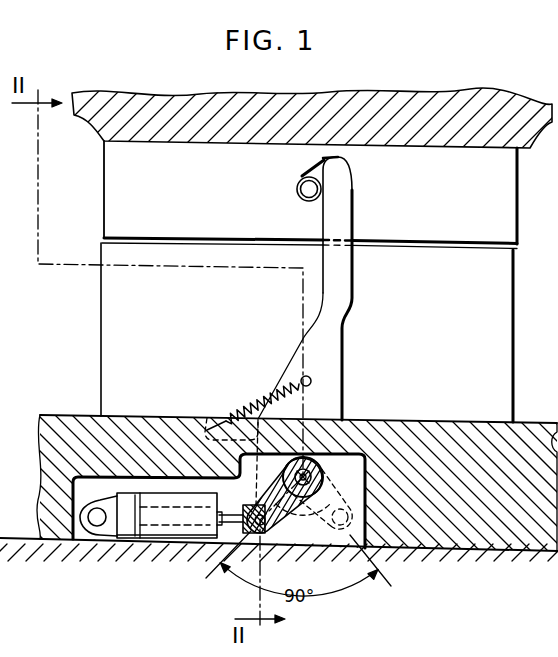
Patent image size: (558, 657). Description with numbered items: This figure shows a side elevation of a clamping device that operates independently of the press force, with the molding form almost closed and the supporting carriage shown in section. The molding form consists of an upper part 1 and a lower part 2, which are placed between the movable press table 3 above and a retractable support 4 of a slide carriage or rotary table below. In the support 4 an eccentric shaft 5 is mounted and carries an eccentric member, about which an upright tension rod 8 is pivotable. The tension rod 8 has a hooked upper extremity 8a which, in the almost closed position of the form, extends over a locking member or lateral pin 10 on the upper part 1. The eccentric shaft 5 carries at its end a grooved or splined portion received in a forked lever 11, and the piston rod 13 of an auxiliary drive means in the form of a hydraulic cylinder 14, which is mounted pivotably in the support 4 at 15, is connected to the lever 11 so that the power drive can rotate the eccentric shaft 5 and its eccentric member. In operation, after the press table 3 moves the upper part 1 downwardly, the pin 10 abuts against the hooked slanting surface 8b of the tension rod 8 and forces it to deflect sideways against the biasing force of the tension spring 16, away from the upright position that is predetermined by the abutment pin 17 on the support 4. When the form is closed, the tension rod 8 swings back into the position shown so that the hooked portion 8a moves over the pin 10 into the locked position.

The upper part 1 is at (116, 169).
The lower part 2 is at (116, 322).
The movable press table 3 is at (390, 103).
The retractable support 4 is at (50, 450).
The eccentric shaft 5 is at (318, 478).
The tension rod 8 is at (334, 355).
The hooked upper extremity 8a is at (301, 177).
The hooked slanting surface 8b is at (322, 158).
The lateral pin 10 is at (302, 198).
The forked lever 11 is at (273, 492).
The piston rod 13 is at (238, 512).
The hydraulic cylinder 14 is at (158, 546).
The pivot mounting 15 is at (93, 524).
The tension spring 16 is at (285, 386).
The abutment pin 17 is at (242, 414).